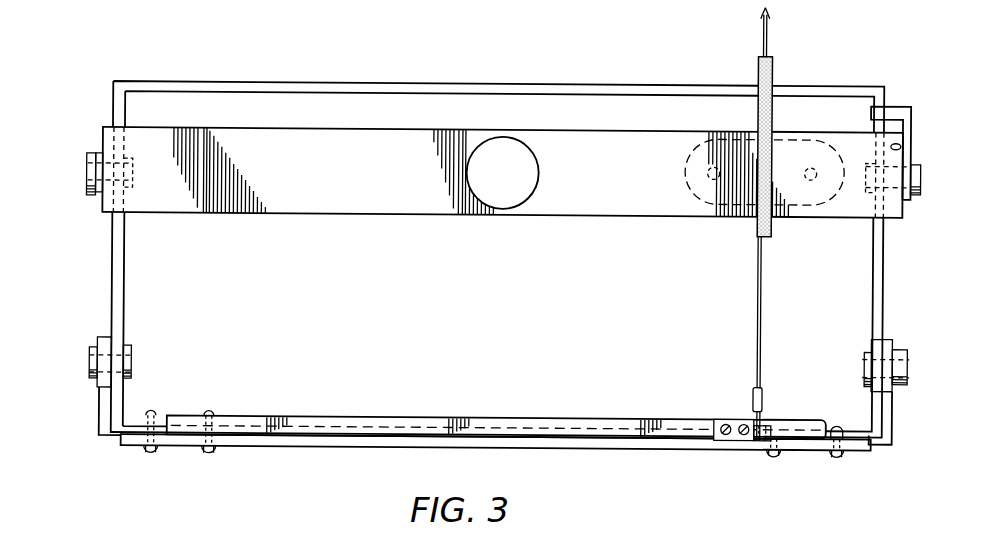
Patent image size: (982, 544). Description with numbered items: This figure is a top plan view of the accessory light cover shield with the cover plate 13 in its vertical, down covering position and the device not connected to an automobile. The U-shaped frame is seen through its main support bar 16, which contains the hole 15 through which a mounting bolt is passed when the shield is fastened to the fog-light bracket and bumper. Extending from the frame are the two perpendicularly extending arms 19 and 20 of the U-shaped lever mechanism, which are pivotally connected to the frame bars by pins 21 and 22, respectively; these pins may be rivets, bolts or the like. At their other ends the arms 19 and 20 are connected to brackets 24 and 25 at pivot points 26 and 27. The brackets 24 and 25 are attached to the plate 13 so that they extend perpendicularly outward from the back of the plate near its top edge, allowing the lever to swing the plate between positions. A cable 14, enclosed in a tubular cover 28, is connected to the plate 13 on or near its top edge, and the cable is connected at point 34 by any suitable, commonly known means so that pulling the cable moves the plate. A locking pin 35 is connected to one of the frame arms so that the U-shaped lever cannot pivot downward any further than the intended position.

The cover plate 13 is at (300, 446).
The cable 14 is at (772, 27).
The hole 15 is at (512, 181).
The main support bar 16 is at (324, 178).
The arm 19 is at (114, 271).
The arm 20 is at (886, 86).
The pin 21 is at (87, 157).
The pin 22 is at (920, 174).
The bracket 24 is at (100, 407).
The bracket 25 is at (893, 406).
The pivot point 26 is at (90, 360).
The pivot point 27 is at (908, 348).
The tubular cover 28 is at (756, 229).
The connection point 34 is at (758, 441).
The locking pin 35 is at (911, 111).